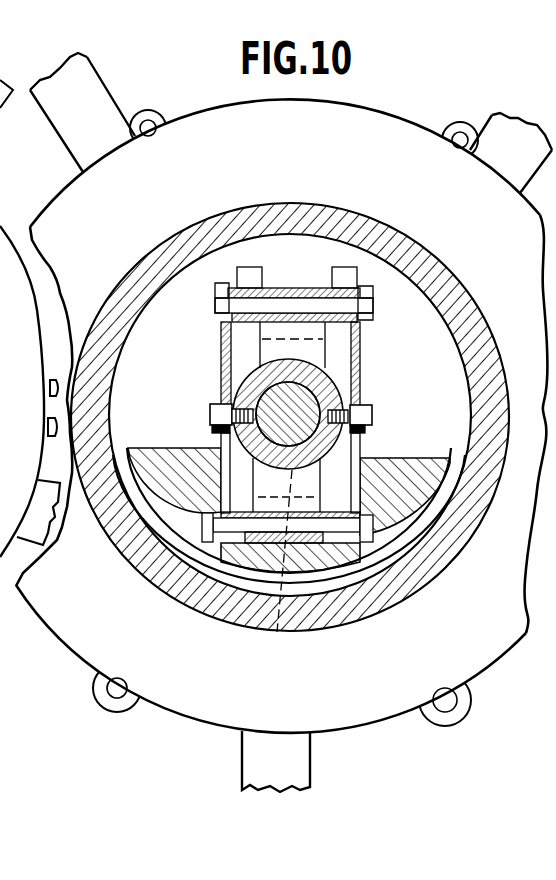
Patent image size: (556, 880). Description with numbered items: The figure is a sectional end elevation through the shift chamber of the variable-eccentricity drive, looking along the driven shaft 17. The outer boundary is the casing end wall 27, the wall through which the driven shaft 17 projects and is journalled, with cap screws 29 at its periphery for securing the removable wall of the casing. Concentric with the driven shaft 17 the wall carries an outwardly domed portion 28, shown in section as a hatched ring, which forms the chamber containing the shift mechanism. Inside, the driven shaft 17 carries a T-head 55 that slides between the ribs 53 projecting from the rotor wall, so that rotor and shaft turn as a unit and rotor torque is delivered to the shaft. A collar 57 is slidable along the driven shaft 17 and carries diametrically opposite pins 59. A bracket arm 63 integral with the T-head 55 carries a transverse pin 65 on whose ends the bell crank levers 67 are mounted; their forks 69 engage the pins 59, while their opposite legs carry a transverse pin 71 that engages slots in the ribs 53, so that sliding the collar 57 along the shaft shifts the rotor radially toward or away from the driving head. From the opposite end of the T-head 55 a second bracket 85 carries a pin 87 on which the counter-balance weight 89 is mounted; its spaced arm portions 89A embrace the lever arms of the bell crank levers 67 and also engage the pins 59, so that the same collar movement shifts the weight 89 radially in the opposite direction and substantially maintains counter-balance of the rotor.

The driven shaft 17 is at (278, 396).
The end wall 27 is at (73, 193).
The outwardly domed portion 28 is at (431, 273).
The cap screws 29 is at (117, 688).
The ribs 53 is at (341, 268).
The T-head 55 is at (273, 562).
The collar 57 is at (322, 383).
The pins 59 is at (211, 412).
The bracket arm 63 is at (312, 338).
The pin 65 is at (373, 306).
The bell crank levers 67 is at (224, 335).
The forks 69 is at (232, 416).
The transverse pin 71 is at (309, 292).
The second bracket 85 is at (278, 483).
The pin 87 is at (230, 523).
The counter-balance weight 89 is at (379, 473).
The arm portions 89A is at (365, 436).